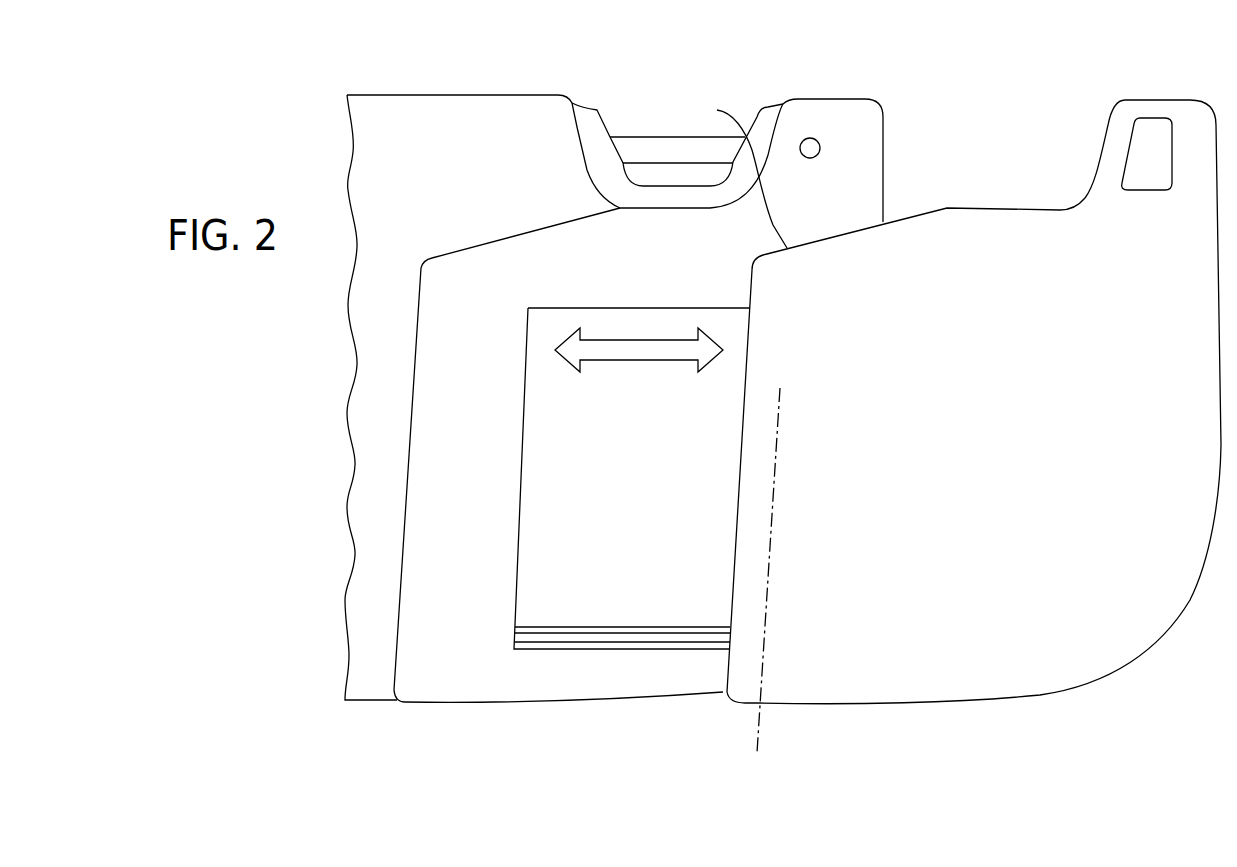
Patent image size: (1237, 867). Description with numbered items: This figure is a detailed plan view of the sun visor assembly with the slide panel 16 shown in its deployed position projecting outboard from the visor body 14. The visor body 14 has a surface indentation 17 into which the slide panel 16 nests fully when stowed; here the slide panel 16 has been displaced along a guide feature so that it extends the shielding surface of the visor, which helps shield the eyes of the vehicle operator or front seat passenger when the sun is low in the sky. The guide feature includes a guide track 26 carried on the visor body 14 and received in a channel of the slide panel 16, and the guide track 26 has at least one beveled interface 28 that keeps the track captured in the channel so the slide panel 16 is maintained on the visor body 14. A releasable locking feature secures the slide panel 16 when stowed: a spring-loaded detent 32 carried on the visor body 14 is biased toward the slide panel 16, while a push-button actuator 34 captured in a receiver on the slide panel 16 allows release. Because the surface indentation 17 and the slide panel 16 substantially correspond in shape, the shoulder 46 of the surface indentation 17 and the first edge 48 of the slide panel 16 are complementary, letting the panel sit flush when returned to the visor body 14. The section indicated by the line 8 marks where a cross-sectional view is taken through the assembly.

The section line 8- 8 is at (758, 745).
The visor body 14 is at (365, 610).
The slide panel 16 is at (1007, 664).
The surface indentation 17 is at (440, 653).
The guide track 26 is at (565, 462).
The beveled interface 28 is at (598, 643).
The spring-loaded detent 32 is at (817, 145).
The push-button actuator 34 is at (1153, 130).
The shoulder 46 is at (463, 252).
The first edge 48 is at (752, 277).